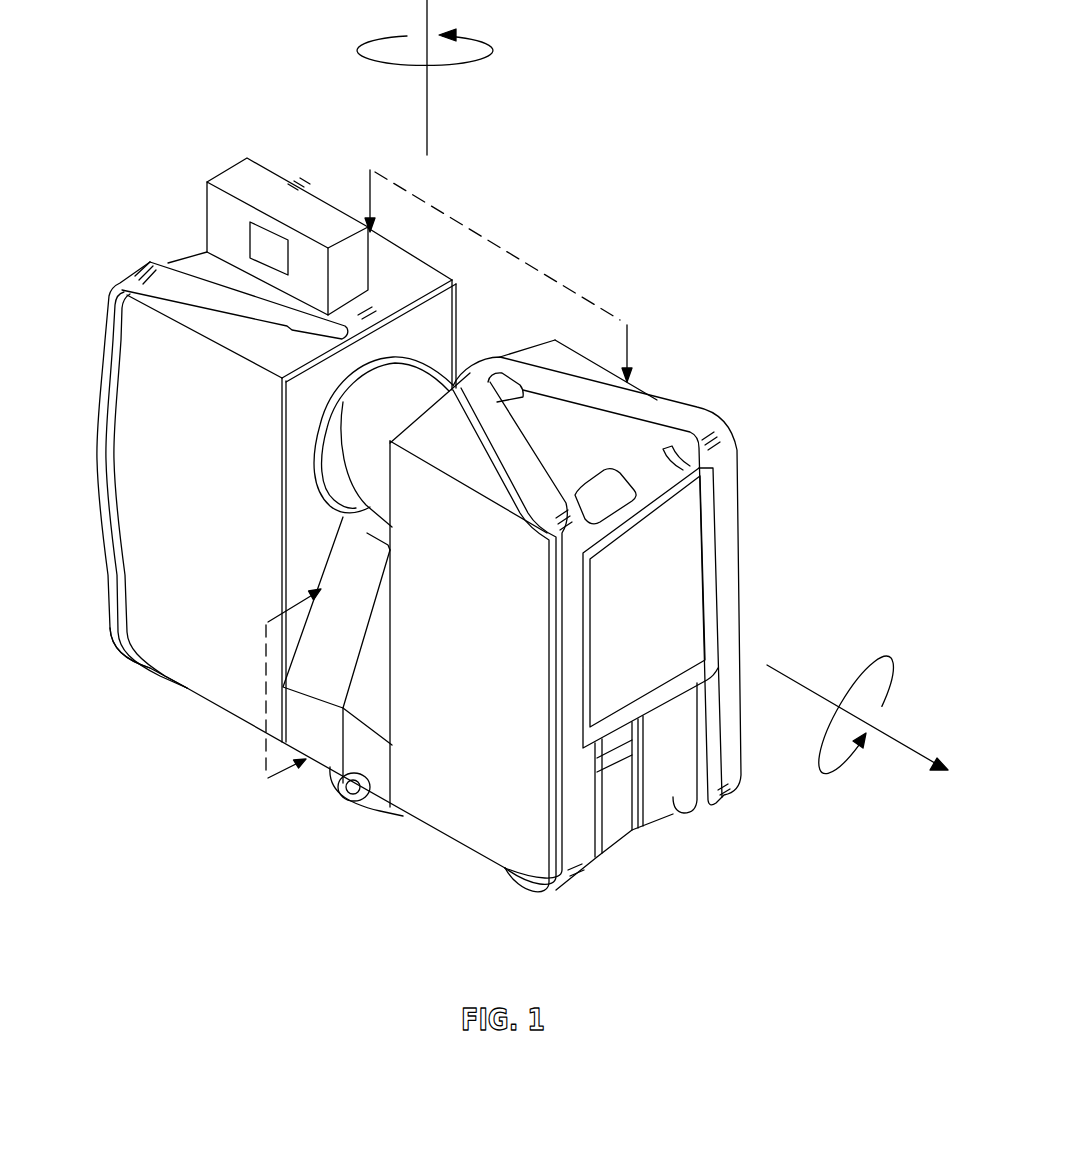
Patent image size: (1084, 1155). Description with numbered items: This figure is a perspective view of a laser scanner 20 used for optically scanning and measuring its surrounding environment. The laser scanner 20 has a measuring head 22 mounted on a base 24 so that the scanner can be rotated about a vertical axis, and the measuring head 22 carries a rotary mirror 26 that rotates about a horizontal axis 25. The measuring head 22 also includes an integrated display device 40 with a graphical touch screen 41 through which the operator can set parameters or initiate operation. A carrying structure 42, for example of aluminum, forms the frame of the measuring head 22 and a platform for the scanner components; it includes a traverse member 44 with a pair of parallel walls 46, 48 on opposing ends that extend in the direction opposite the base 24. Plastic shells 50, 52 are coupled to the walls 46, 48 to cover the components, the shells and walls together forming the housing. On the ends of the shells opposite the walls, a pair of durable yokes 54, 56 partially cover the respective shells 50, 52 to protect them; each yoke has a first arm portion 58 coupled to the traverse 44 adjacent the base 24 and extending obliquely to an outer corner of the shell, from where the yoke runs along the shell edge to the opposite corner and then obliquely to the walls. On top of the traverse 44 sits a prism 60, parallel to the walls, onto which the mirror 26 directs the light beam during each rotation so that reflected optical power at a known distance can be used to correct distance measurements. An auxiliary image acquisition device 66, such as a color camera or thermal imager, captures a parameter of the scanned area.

The laser scanner 20 is at (140, 42).
The measuring head 22 is at (710, 282).
The base 24 is at (342, 797).
The horizontal axis 25 is at (910, 742).
The rotary mirror 26 is at (393, 390).
The display device 40 is at (778, 589).
The graphical touch screen 41 is at (668, 573).
The carrying structure 42 is at (204, 788).
The traverse member 44 is at (375, 763).
The wall 46 is at (548, 340).
The wall 48 is at (435, 300).
The shell 50 is at (132, 465).
The shell 52 is at (530, 830).
The yoke 54 is at (687, 420).
The yoke 56 is at (147, 275).
The first arm portion 58 is at (115, 640).
The prism 60 is at (388, 565).
The auxiliary image acquisition device 66 is at (228, 167).